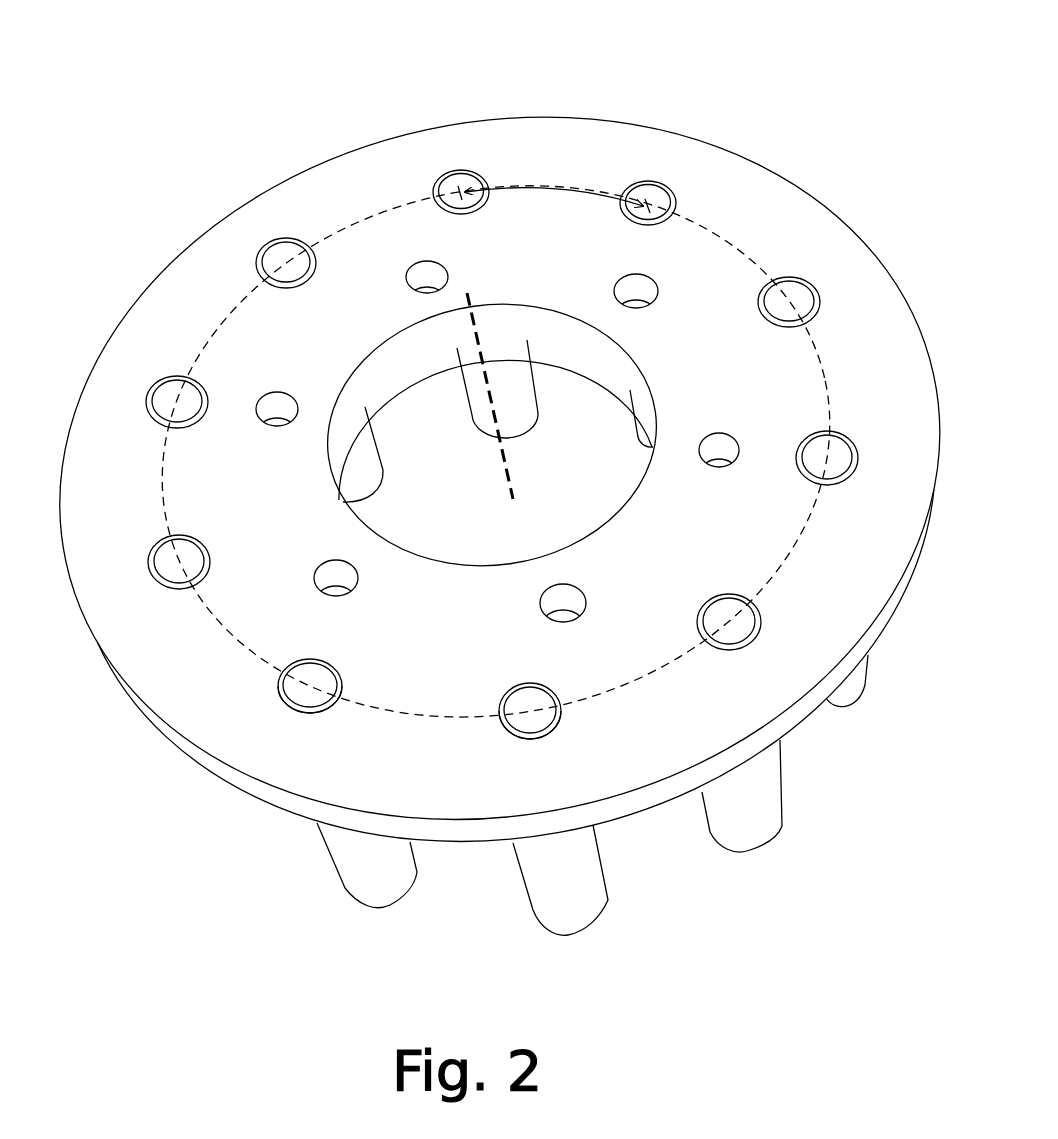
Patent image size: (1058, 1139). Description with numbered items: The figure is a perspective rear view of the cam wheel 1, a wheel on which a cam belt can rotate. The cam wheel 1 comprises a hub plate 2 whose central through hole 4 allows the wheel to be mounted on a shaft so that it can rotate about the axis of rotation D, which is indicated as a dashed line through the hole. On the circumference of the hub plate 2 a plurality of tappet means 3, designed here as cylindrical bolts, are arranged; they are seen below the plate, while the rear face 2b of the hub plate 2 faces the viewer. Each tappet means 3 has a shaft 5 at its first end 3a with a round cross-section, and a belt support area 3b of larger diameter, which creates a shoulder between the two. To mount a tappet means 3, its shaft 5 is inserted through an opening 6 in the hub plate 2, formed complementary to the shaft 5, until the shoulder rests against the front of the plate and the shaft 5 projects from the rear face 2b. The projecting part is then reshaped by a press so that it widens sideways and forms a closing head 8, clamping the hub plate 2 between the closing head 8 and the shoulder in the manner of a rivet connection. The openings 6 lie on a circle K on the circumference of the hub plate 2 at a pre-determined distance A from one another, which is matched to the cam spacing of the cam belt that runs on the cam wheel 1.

The cam wheel 1 is at (588, 92).
The hub plate 2 is at (785, 204).
The rear face 2b is at (707, 165).
The tappet means 3 is at (732, 840).
The first end 3a is at (708, 623).
The belt support area 3b is at (764, 814).
The through hole 4 is at (598, 459).
The shaft 5 is at (745, 625).
The opening 6 is at (727, 657).
The closing head 8 is at (503, 730).
The distance A is at (547, 185).
The circle K is at (340, 225).
The axis of rotation D is at (512, 465).